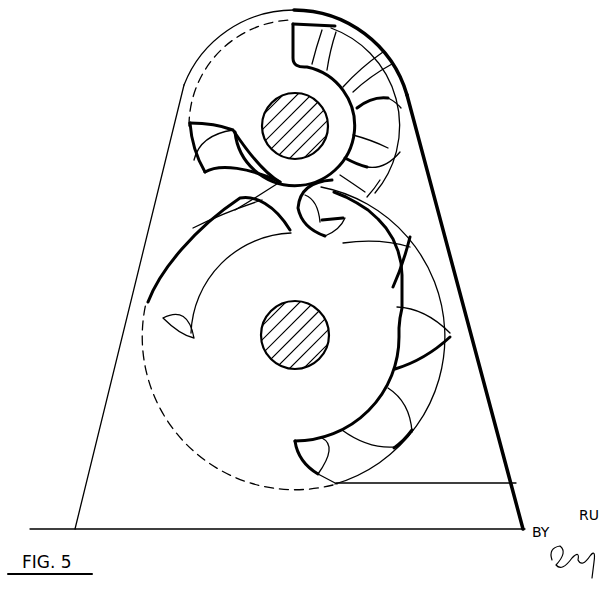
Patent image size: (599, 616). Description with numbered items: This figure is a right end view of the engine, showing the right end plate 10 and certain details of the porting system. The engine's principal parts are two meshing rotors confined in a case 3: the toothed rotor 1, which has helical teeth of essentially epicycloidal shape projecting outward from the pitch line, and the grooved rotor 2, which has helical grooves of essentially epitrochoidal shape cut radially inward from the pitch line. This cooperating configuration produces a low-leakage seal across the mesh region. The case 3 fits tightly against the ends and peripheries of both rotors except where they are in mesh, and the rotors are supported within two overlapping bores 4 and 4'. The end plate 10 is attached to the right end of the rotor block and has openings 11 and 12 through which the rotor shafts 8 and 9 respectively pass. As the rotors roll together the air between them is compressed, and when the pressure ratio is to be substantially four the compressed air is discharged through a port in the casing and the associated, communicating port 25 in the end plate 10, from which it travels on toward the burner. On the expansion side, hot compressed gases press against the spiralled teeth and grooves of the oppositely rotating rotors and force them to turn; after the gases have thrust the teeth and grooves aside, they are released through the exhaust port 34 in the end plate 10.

The toothed rotor 1 is at (430, 333).
The grooved rotor 2 is at (193, 160).
The case 3 is at (206, 47).
The bore 4 is at (332, 108).
The bore 4' is at (308, 332).
The shaft 8 is at (296, 323).
The shaft 9 is at (266, 120).
The end plate 10 is at (118, 440).
The opening 11 is at (263, 342).
The opening 12 is at (271, 122).
The port 25 is at (165, 216).
The port 34 is at (387, 111).